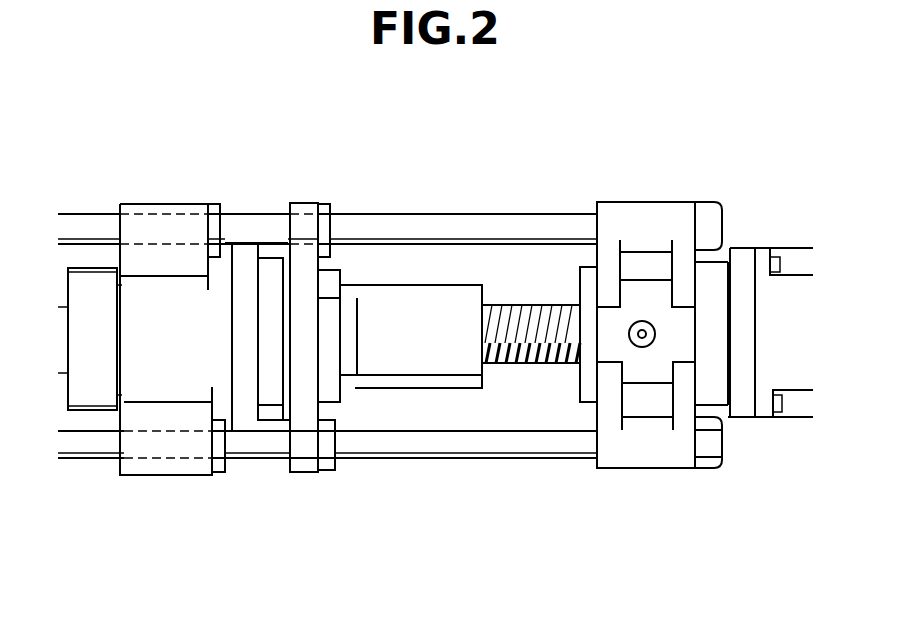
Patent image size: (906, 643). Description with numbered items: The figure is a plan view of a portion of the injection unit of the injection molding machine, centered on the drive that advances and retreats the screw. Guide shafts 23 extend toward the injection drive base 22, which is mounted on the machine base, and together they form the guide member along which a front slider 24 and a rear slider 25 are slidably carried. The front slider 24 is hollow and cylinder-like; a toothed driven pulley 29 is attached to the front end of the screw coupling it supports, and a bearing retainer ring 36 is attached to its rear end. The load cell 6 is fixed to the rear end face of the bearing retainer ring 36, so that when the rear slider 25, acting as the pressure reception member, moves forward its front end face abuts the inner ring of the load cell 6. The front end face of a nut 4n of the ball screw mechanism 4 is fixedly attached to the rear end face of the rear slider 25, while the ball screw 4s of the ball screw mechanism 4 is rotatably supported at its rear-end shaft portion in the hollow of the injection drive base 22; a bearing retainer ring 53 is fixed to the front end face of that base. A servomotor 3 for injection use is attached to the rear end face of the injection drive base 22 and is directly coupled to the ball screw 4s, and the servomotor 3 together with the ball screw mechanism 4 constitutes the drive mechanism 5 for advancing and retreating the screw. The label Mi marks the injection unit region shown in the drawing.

The servomotor 3 is at (787, 248).
The ball screw mechanism 4 is at (475, 268).
The nut 4n is at (453, 388).
The ball screw 4s is at (528, 363).
The drive mechanism 5 is at (727, 153).
The load cell 6 is at (272, 258).
The injection drive base 22 is at (662, 202).
The guide shafts 23 is at (402, 213).
The front slider 24 is at (165, 203).
The rear slider 25 is at (312, 202).
The toothed driven pulley 29 is at (98, 412).
The bearing retainer ring 36 is at (260, 405).
The bearing retainer ring 53 is at (582, 395).
The injection motor drive Mi is at (590, 134).